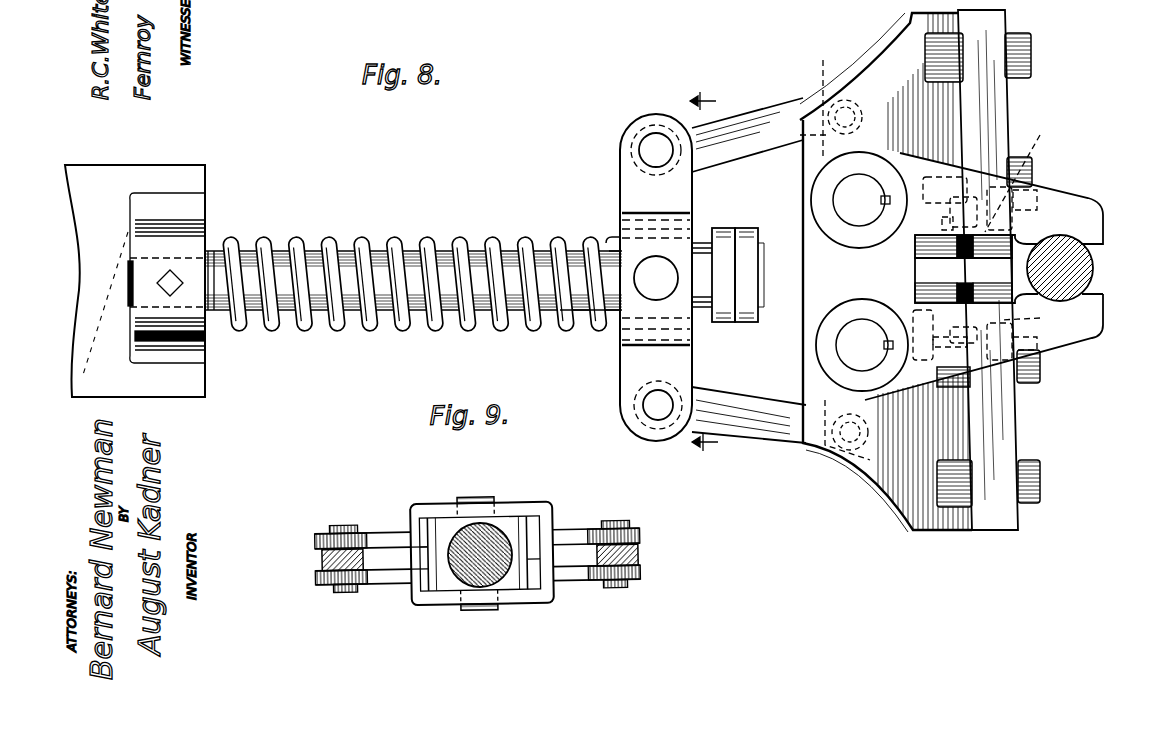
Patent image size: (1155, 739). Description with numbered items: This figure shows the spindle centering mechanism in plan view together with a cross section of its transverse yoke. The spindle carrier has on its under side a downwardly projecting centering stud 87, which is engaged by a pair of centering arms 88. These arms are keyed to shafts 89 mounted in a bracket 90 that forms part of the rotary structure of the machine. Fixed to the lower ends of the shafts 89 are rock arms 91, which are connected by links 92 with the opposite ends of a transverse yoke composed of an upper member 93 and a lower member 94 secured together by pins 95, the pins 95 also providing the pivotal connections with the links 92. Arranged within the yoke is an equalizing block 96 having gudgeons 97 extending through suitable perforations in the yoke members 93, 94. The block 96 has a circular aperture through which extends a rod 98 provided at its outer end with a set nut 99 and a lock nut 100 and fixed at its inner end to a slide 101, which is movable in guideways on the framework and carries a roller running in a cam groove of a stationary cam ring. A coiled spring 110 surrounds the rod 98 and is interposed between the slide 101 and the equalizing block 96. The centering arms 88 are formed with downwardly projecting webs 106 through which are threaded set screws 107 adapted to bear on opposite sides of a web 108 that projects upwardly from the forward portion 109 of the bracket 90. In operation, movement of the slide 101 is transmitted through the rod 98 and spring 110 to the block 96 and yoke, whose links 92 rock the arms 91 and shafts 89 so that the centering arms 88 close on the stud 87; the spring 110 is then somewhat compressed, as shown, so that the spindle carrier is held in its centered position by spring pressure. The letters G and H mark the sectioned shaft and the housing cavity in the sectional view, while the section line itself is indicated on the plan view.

In FIG. 8, the centering stud 87 is at (1094, 260).
In FIG. 8, the centering arms 88 is at (1036, 210).
In FIG. 8, the shafts 89 is at (867, 188).
In FIG. 8, the bracket 90 is at (890, 265).
In FIG. 8, the rock arms 91 is at (858, 479).
In FIG. 8, the links 92 is at (742, 120).
In FIG. 9, the links 92 is at (322, 554).
In FIG. 8, the upper yoke member 93 is at (650, 182).
In FIG. 9, the upper yoke member 93 is at (518, 508).
In FIG. 9, the lower yoke member 94 is at (545, 603).
In FIG. 8, the pins 95 is at (657, 148).
In FIG. 9, the pins 95 is at (344, 522).
In FIG. 8, the equalizing block 96 is at (636, 248).
In FIG. 9, the equalizing block 96 is at (443, 528).
In FIG. 8, the gudgeons 97 is at (650, 292).
In FIG. 9, the gudgeons 97 is at (482, 498).
In FIG. 8, the rod 98 is at (477, 258).
In FIG. 9, the rod 98 is at (455, 556).
In FIG. 8, the set nut 99 is at (722, 230).
In FIG. 8, the lock nut 100 is at (746, 232).
In FIG. 8, the slide 101 is at (186, 181).
In FIG. 8, the webs 106 is at (1033, 223).
In FIG. 8, the set screws 107 is at (953, 260).
In FIG. 8, the web 108 is at (983, 276).
In FIG. 8, the forward portion of the bracket 109 is at (975, 427).
In FIG. 8, the coiled spring 110 is at (362, 240).
In FIG. 8, the shaft G is at (557, 305).
In FIG. 9, the shaft G is at (470, 574).
In FIG. 9, the cavity H is at (515, 588).